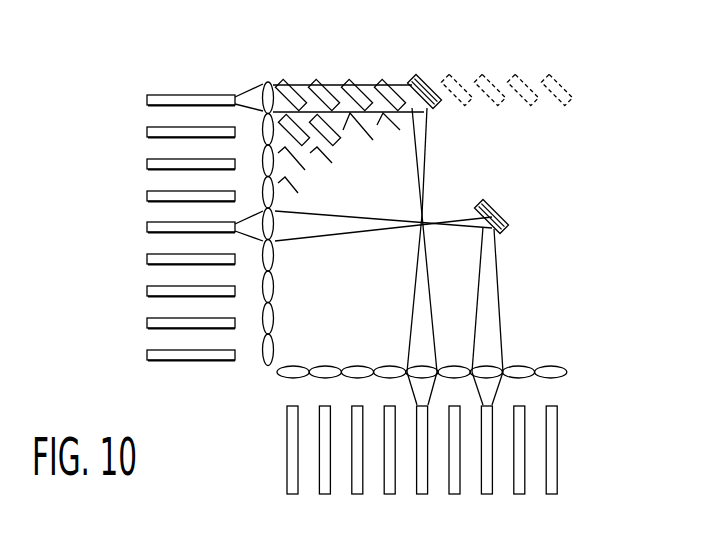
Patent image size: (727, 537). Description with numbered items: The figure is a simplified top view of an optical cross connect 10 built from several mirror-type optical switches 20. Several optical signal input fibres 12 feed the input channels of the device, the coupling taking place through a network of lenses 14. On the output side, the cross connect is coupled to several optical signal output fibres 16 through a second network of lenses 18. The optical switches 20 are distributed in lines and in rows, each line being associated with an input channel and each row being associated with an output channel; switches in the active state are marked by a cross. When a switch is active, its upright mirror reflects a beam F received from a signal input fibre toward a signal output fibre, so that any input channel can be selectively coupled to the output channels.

The optical cross connect 10 is at (602, 118).
The optical signal input fibres 12 is at (157, 165).
The network of lenses 14 is at (266, 82).
The beam F is at (337, 87).
The optical switches 20 is at (432, 84).
The second network of lenses 18 is at (560, 368).
The optical signal output fibres 16 is at (518, 445).